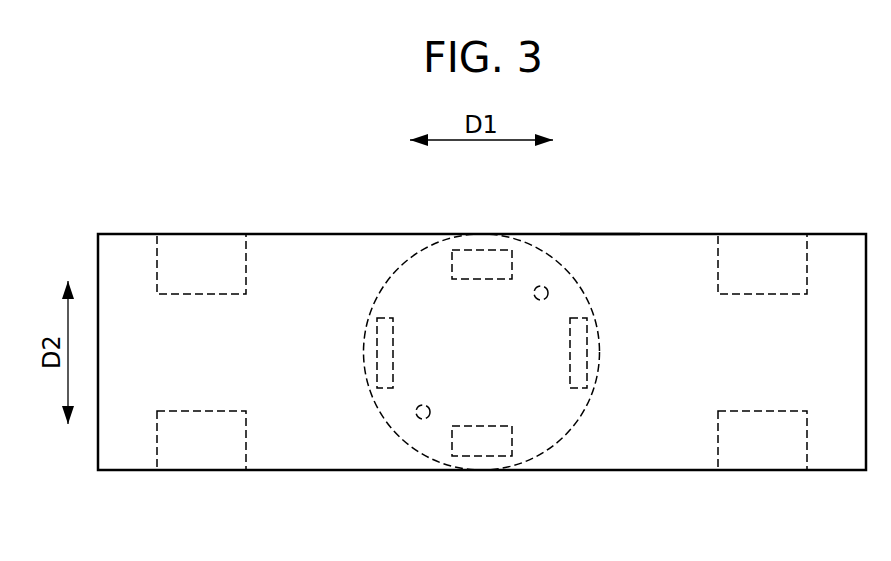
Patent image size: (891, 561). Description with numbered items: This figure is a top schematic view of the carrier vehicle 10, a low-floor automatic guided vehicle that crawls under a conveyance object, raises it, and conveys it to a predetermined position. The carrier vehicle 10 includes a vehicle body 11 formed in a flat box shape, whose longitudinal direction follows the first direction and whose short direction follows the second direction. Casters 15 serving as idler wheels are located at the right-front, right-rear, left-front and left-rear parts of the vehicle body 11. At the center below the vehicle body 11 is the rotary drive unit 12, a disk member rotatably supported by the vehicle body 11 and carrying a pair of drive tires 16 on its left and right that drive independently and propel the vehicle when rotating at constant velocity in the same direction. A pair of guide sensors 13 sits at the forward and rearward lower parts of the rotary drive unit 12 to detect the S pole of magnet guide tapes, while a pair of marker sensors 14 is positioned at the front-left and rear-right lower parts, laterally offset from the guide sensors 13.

The carrier vehicle 10 is at (648, 222).
The vehicle body 11 is at (593, 234).
The rotary drive unit 12 is at (412, 248).
The guide sensors 13 is at (377, 347).
The marker sensors 14 is at (534, 294).
The casters 15 is at (202, 234).
The drive tires 16 is at (485, 250).